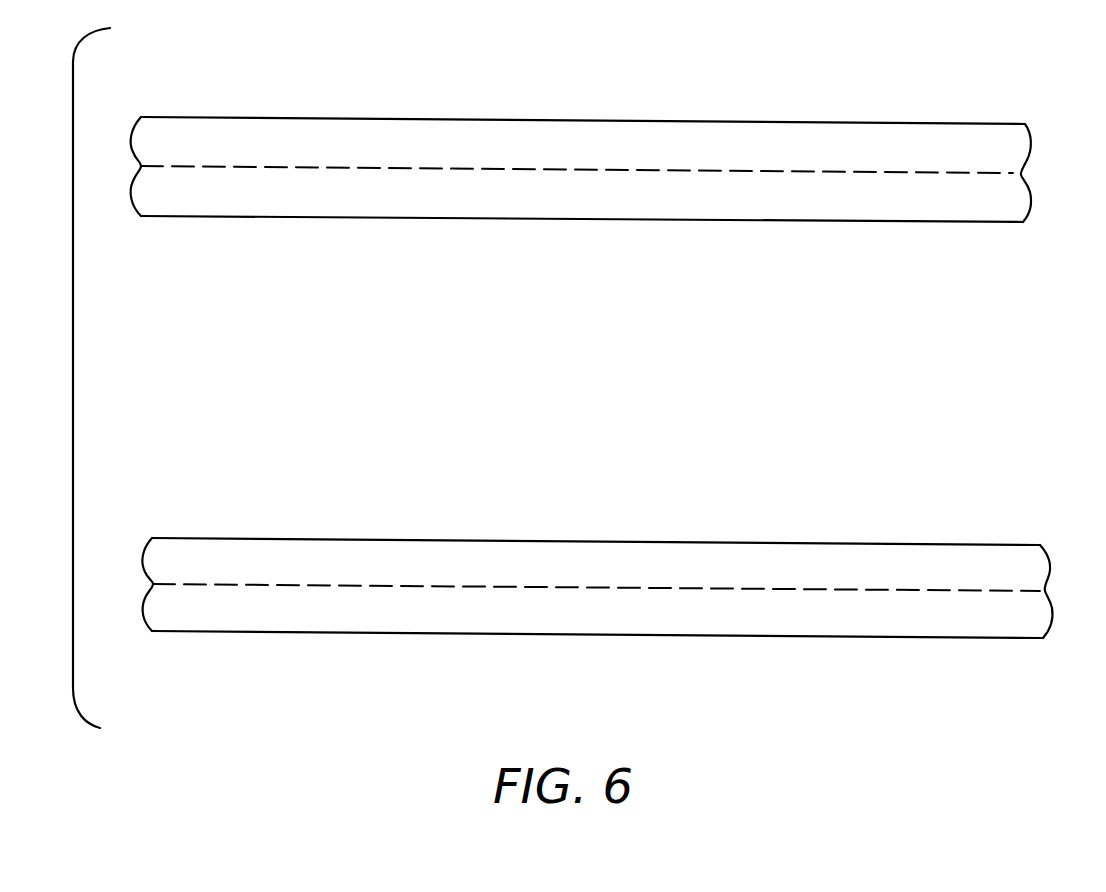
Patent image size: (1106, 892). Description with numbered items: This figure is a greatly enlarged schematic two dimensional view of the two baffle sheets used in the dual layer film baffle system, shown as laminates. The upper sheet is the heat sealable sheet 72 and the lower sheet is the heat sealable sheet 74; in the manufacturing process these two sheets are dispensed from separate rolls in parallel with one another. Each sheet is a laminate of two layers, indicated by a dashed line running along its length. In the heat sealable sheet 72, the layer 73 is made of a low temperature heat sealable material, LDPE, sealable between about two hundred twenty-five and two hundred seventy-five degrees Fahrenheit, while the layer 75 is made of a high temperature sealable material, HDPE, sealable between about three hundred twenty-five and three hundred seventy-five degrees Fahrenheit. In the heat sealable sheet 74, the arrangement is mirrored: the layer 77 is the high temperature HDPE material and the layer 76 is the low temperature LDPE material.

The heat sealable sheet 72 is at (581, 162).
The layer 73 is at (391, 147).
The layer 75 is at (378, 190).
The heat sealable sheet 74 is at (597, 576).
The layer 77 is at (443, 561).
The layer 76 is at (440, 616).